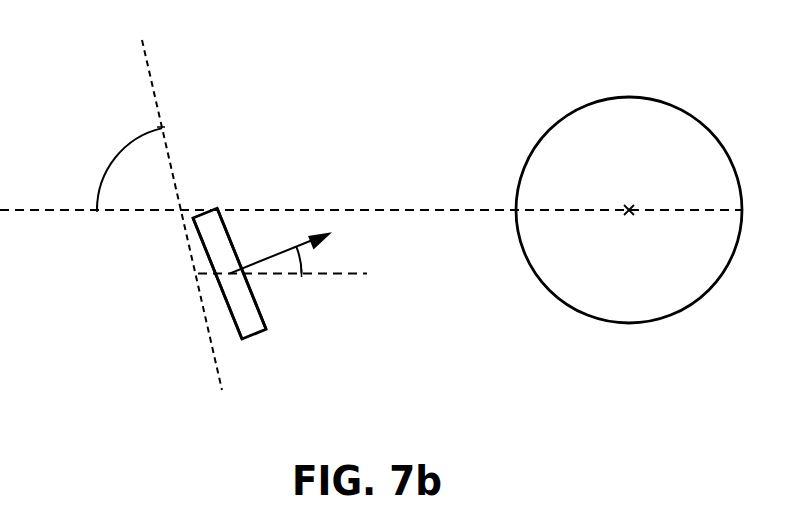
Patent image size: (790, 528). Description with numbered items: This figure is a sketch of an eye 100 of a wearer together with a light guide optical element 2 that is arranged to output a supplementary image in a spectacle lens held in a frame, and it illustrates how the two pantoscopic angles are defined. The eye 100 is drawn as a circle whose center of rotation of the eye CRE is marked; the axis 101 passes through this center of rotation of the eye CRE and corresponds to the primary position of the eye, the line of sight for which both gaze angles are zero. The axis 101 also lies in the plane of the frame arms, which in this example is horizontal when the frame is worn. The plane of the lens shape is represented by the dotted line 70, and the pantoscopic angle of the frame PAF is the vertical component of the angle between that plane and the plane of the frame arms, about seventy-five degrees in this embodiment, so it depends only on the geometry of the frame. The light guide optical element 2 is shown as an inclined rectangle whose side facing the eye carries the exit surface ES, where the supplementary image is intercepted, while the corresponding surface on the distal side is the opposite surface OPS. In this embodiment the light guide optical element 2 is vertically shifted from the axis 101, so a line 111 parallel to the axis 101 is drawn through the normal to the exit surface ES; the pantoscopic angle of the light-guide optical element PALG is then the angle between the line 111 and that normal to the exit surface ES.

The light guide optical element 2 is at (257, 347).
The dotted line 70 is at (148, 65).
The eye 100 is at (644, 98).
The axis 101 is at (458, 210).
The line 111 is at (265, 276).
The pantoscopic angle of the frame PAF is at (112, 169).
The pantoscopic angle of the light-guide optical element PALG is at (303, 262).
The exit surface ES is at (228, 233).
The opposite surface OPS is at (233, 320).
The center of rotation of the eye CRE is at (629, 210).